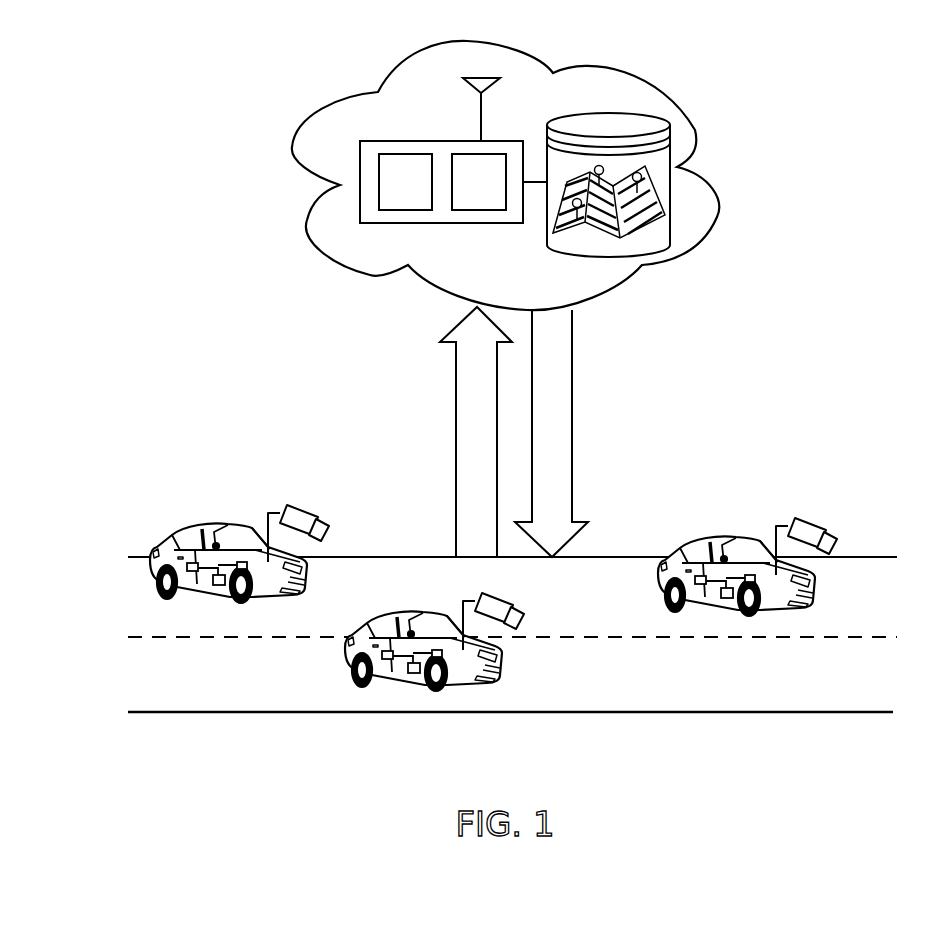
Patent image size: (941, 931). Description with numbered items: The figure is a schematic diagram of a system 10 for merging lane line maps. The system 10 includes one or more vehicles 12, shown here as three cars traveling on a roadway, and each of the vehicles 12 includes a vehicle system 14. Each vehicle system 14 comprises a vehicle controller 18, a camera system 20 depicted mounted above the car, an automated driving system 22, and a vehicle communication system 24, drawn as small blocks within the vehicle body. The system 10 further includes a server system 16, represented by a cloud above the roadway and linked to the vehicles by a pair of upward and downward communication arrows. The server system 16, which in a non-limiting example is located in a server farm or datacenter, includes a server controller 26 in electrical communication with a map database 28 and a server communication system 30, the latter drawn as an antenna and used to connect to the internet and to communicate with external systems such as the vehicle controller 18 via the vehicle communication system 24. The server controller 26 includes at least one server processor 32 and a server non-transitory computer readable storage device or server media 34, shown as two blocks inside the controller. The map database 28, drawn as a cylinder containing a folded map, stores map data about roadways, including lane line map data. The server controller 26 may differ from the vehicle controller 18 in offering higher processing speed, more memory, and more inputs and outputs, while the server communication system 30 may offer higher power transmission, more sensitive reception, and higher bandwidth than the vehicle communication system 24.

The system 10 is at (170, 143).
The vehicle 12 is at (213, 522).
The vehicle system 14 is at (458, 573).
The server system 16 is at (312, 105).
The vehicle controller 18 is at (220, 586).
The camera system 20 is at (308, 508).
The automated driving system 22 is at (188, 585).
The vehicle communication system 24 is at (255, 598).
The server controller 26 is at (453, 204).
The map database 28 is at (592, 120).
The server communication system 30 is at (475, 92).
The server processor 32 is at (391, 194).
The server media 34 is at (465, 194).